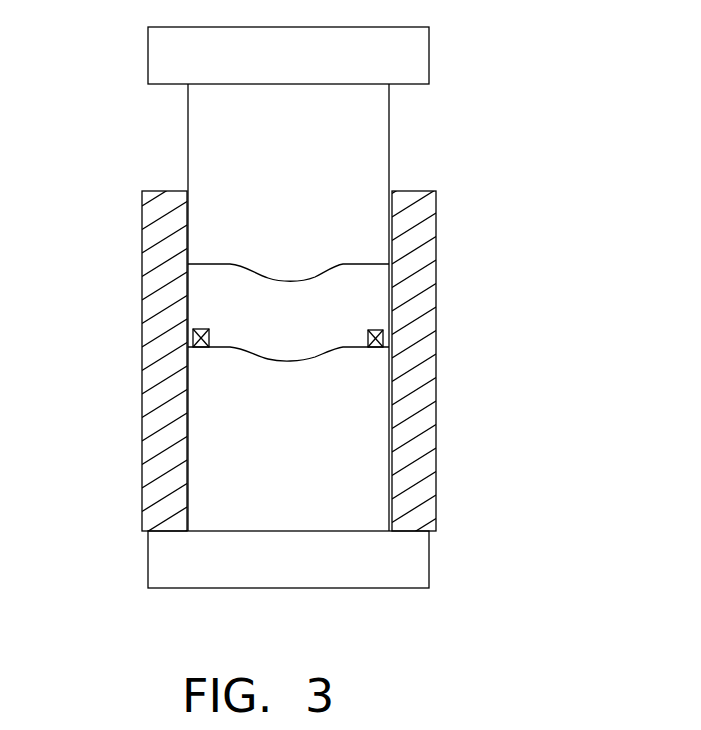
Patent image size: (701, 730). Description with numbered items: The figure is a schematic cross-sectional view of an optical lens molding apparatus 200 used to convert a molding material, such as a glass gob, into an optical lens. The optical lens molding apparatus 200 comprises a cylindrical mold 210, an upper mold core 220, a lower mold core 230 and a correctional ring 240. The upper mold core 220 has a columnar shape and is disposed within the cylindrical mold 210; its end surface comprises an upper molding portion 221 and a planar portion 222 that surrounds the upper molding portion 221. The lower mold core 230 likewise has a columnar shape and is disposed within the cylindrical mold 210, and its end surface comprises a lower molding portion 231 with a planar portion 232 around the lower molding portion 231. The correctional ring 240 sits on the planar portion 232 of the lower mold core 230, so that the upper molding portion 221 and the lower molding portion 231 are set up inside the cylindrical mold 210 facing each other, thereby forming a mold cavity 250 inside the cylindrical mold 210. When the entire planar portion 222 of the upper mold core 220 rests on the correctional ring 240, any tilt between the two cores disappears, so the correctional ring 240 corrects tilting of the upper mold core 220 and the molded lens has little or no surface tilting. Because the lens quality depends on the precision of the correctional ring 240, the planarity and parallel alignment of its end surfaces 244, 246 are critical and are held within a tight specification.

The optical lens molding apparatus 200 is at (625, 609).
The cylindrical mold 210 is at (330, 362).
The upper mold core 220 is at (365, 55).
The upper molding portion 221 is at (116, 253).
The planar portion 222 is at (208, 307).
The lower mold core 230 is at (342, 559).
The lower molding portion 231 is at (408, 273).
The planar portion 232 is at (363, 299).
The correctional ring 240 is at (453, 319).
The end surface of correctional ring 244 is at (122, 325).
The end surface of correctional ring 246 is at (119, 371).
The mold cavity 250 is at (130, 290).